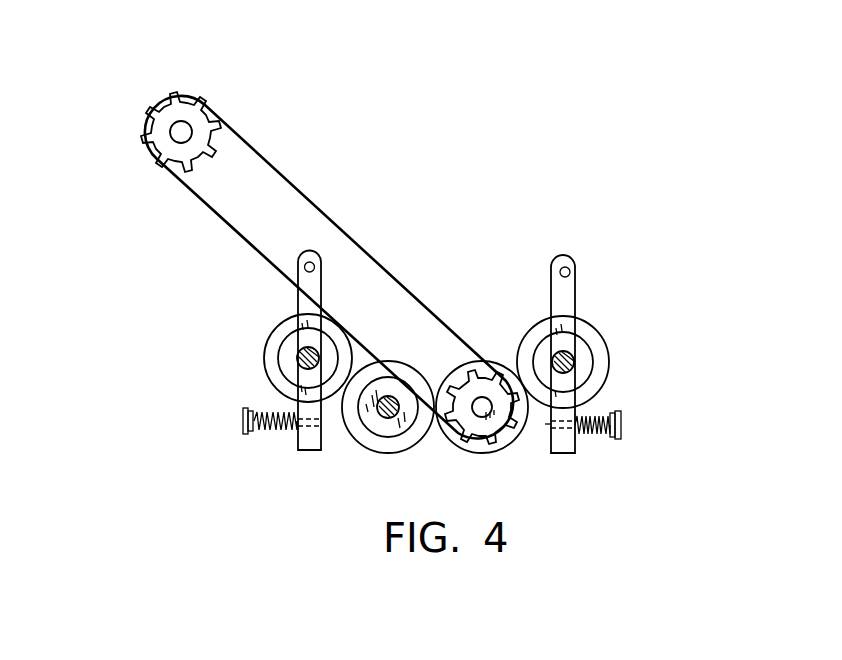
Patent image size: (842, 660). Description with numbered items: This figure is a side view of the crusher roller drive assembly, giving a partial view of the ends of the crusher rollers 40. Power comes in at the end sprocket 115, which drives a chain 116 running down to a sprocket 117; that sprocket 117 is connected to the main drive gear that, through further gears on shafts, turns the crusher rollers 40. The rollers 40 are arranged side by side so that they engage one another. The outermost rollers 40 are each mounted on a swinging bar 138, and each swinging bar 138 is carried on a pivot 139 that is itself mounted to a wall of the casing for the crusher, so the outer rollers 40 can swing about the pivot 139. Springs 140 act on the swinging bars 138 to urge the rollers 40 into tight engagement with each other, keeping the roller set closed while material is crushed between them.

The crusher roller 40 is at (263, 354).
The end sprocket 115 is at (155, 152).
The chain 116 is at (222, 218).
The sprocket 117 is at (480, 377).
The swinging bar 138 is at (296, 302).
The pivot 139 is at (305, 253).
The spring 140 is at (272, 438).